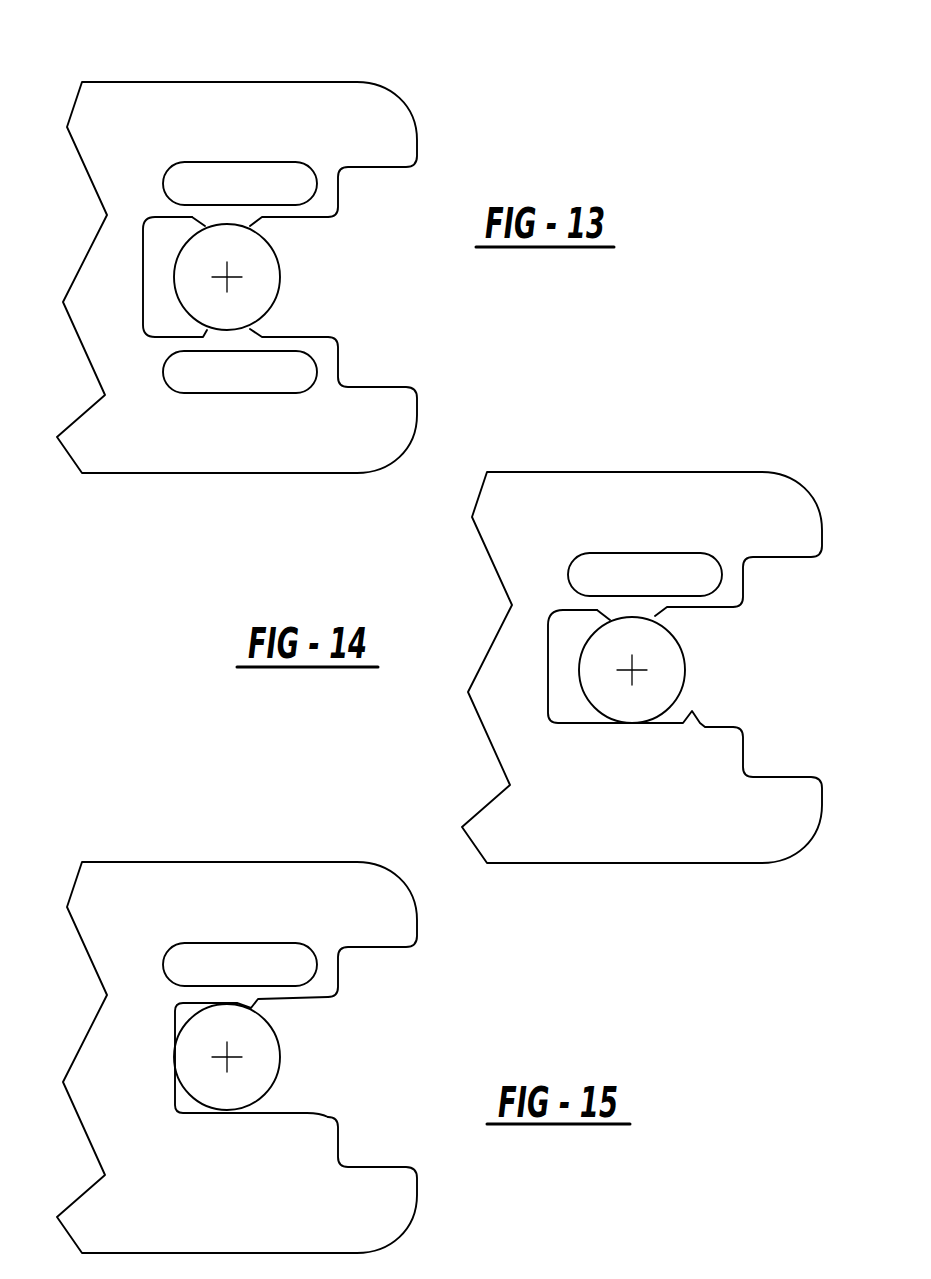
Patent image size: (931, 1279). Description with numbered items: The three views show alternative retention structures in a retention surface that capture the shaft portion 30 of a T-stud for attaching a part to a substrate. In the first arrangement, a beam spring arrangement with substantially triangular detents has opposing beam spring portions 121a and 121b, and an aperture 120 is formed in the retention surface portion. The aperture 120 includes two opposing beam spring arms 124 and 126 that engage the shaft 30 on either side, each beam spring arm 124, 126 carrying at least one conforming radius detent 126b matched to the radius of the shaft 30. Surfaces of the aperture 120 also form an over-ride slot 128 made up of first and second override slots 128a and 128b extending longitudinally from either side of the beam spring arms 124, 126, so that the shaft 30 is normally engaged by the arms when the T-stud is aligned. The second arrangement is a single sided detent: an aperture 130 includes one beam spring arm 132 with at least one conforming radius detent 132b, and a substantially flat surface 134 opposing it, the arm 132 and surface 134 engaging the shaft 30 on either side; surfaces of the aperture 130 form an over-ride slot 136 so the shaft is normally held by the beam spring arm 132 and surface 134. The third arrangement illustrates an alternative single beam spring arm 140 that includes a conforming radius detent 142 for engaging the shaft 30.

In FIG. 13, the shaft portion 30 is at (280, 288).
In FIG. 14, the shaft portion 30 is at (686, 670).
In FIG. 15, the shaft portion 30 is at (283, 1068).
In FIG. 13, the aperture 120 is at (293, 221).
In FIG. 13, the beam spring portion 121a is at (240, 190).
In FIG. 13, the beam spring portion 121b is at (232, 397).
In FIG. 13, the beam spring arm 124 is at (270, 213).
In FIG. 13, the beam spring arm 126 is at (273, 340).
In FIG. 13, the conforming radius detent 126b is at (153, 339).
In FIG. 13, the over-ride slot 128 is at (143, 277).
In FIG. 13, the first override slot 128a is at (150, 217).
In FIG. 13, the second override slot 128b is at (285, 347).
In FIG. 14, the aperture 130 is at (722, 605).
In FIG. 14, the beam spring arm 132 is at (687, 605).
In FIG. 14, the conforming radius detent 132b is at (612, 622).
In FIG. 14, the flat surface 134 is at (693, 713).
In FIG. 14, the over-ride slot 136 is at (548, 640).
In FIG. 15, the single beam spring arm 140 is at (292, 992).
In FIG. 15, the conforming radius detent 142 is at (252, 1006).